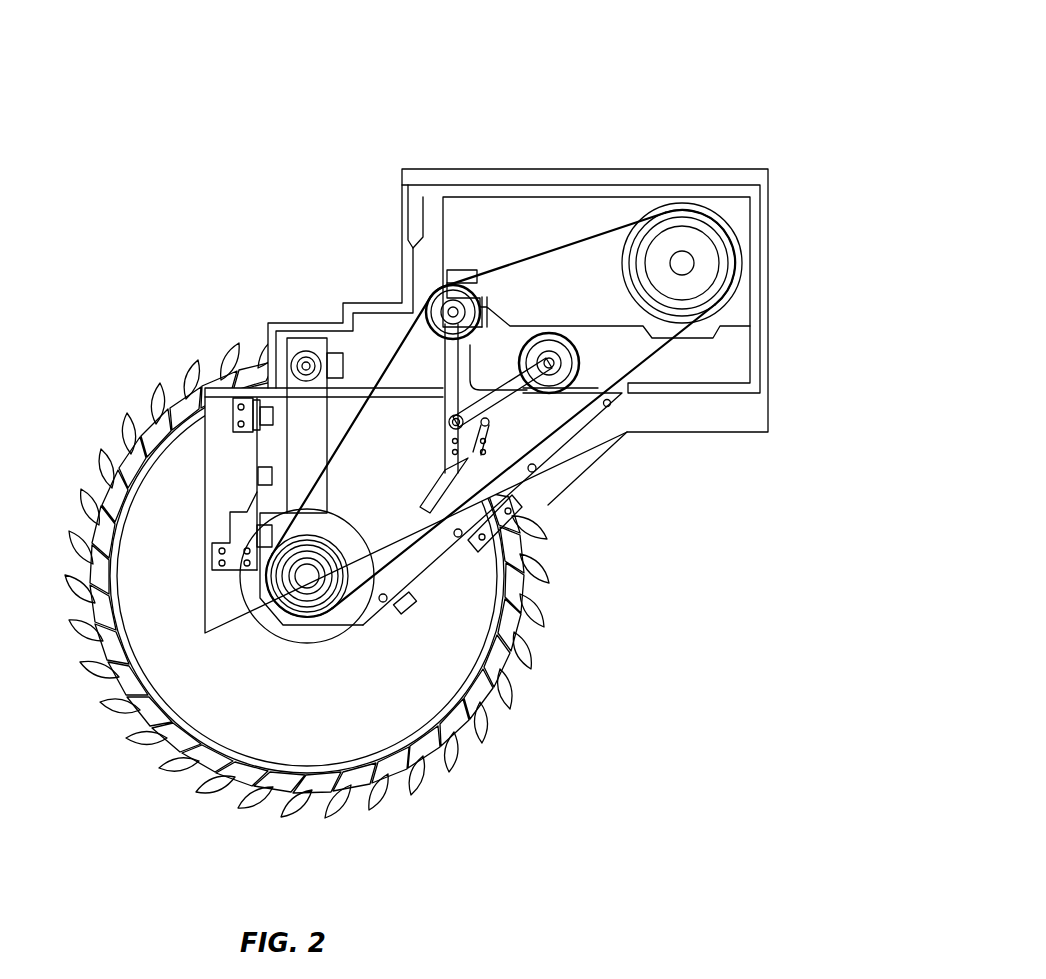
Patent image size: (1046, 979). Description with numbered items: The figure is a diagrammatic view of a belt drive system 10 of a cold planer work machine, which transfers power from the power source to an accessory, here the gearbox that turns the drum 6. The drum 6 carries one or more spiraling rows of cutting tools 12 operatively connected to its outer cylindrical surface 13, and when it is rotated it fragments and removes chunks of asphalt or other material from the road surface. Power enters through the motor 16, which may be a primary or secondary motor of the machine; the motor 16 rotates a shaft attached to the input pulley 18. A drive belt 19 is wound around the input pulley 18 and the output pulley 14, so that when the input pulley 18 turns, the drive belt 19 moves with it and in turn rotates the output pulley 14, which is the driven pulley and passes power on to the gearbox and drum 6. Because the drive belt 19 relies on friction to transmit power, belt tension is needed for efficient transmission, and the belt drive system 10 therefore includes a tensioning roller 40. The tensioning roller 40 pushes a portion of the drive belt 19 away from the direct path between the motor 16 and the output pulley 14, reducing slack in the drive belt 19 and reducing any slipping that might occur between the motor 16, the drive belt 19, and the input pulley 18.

The drum 6 is at (145, 572).
The belt drive system 10 is at (419, 461).
The cutting tools 12 is at (205, 358).
The outer cylindrical surface 13 is at (170, 420).
The output pulley 14 is at (253, 618).
The motor 16 is at (540, 228).
The input pulley 18 is at (722, 225).
The drive belt 19 is at (402, 340).
The tensioning roller 40 is at (483, 452).